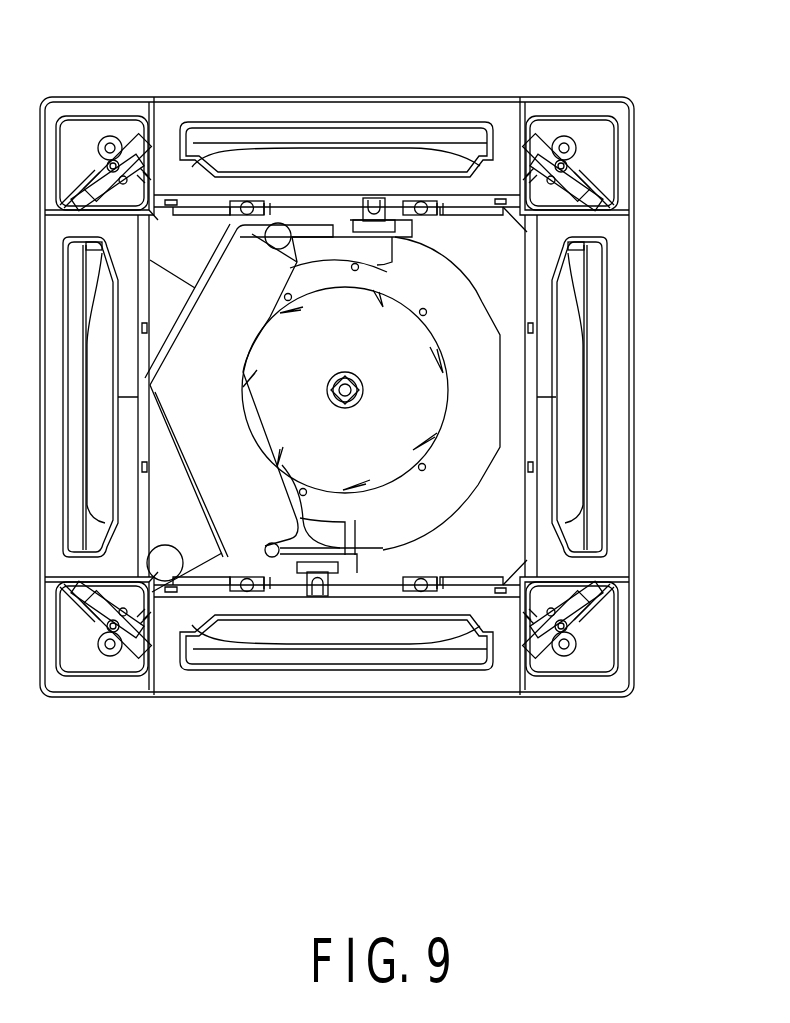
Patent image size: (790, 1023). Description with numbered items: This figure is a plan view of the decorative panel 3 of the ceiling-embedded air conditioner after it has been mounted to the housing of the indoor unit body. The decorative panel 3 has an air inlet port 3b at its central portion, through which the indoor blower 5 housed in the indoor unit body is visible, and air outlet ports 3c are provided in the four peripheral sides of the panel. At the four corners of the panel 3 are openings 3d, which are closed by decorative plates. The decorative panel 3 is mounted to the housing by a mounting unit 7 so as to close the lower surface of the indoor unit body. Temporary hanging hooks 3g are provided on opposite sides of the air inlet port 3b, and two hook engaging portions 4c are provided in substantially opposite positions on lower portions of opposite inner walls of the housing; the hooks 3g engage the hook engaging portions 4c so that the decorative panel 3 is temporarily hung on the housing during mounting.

The decorative panel 3 is at (633, 223).
The air inlet port 3b is at (457, 315).
The air outlet ports 3c is at (600, 288).
The openings 3d is at (598, 607).
The temporary hanging hooks 3g is at (373, 198).
The hook engaging portions 4c is at (389, 197).
The indoor blower 5 is at (325, 313).
The mounting unit 7 is at (598, 651).